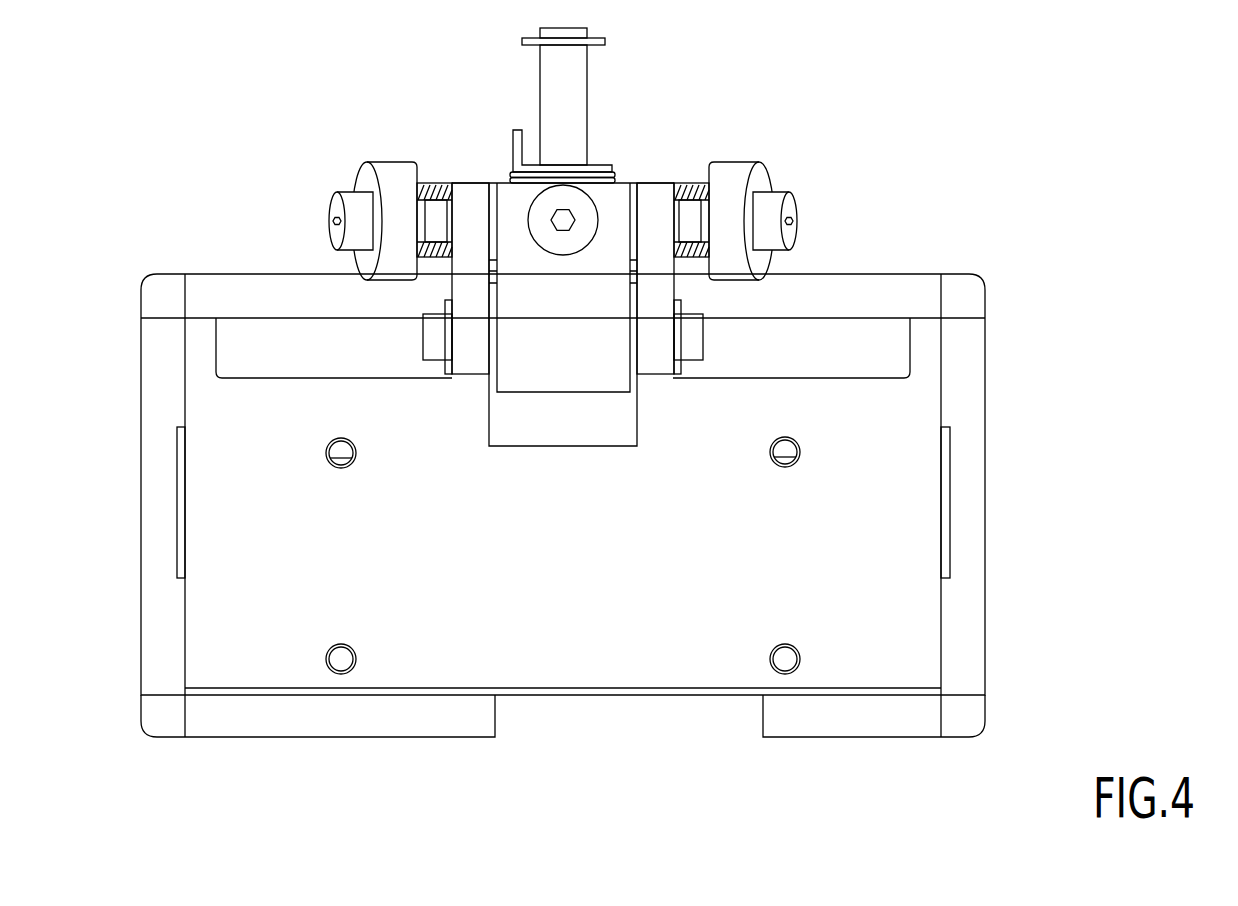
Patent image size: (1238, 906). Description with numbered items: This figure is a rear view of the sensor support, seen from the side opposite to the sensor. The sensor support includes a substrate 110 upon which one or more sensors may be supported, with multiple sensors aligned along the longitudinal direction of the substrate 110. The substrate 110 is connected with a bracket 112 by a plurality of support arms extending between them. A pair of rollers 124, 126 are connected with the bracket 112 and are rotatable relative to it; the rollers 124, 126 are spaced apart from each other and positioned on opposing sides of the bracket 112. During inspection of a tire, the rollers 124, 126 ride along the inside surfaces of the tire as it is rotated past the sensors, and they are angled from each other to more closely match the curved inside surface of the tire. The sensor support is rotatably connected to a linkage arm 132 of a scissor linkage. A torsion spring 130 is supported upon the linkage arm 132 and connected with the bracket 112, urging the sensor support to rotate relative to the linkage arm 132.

The substrate 110 is at (348, 716).
The bracket 112 is at (618, 200).
The roller 124 is at (740, 167).
The roller 126 is at (380, 167).
The torsion spring 130 is at (598, 166).
The linkage arm 132 is at (553, 82).